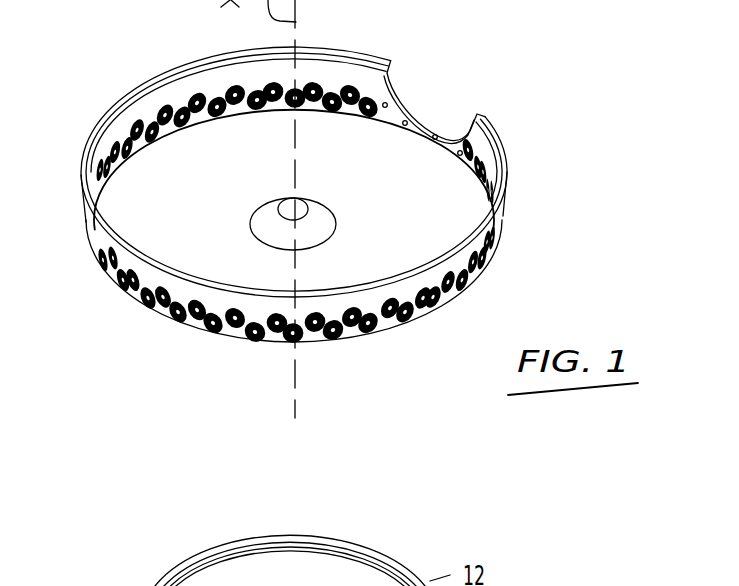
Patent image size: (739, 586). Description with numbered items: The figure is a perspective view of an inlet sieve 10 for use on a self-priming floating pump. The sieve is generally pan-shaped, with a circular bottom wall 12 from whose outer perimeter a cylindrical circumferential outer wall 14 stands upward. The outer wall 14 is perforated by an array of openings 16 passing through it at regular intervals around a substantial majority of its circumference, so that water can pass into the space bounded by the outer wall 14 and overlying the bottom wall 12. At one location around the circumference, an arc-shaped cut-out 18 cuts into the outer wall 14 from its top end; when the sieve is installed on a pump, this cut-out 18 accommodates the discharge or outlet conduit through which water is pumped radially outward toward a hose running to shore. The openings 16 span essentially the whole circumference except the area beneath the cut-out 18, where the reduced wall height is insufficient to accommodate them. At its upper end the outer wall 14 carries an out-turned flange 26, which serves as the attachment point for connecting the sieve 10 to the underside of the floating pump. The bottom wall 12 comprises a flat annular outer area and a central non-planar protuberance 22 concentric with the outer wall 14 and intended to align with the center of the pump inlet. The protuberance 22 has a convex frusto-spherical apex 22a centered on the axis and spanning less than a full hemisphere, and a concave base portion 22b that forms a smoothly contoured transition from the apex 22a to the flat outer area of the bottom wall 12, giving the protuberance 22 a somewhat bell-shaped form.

The inlet sieve 10 is at (81, 88).
The bottom wall 12 is at (370, 139).
The circumferential outer wall 14 is at (330, 316).
The openings 16 is at (424, 301).
The arc-shaped cut-out 18 is at (393, 70).
The protuberance 22 is at (255, 210).
The frusto-spherical apex 22a is at (288, 211).
The concave base portion 22b is at (318, 229).
The out-turned flange 26 is at (504, 165).